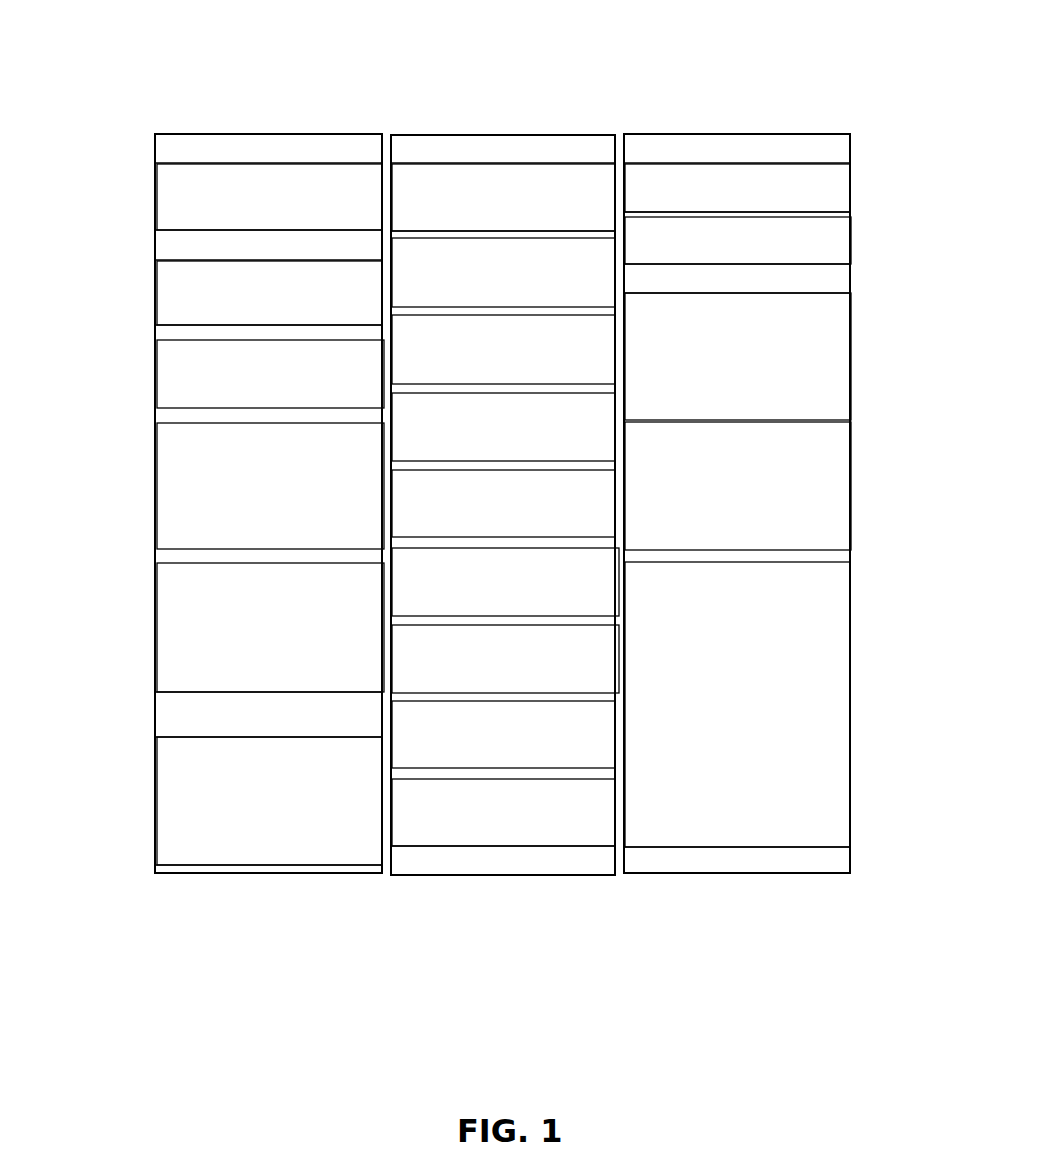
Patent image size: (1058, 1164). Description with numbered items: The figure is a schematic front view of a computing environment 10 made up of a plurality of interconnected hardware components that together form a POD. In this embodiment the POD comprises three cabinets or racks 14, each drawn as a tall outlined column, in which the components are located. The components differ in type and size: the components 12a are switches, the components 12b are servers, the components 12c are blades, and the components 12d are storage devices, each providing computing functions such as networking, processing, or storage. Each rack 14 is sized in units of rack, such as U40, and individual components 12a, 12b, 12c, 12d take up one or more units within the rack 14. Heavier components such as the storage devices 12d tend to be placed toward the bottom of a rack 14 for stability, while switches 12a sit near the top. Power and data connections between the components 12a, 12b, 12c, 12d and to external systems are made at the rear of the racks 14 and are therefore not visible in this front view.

The computing environment 10 is at (283, 92).
The rack 14 is at (345, 134).
The switch 12a is at (155, 201).
The server 12b is at (155, 293).
The blades 12c is at (155, 486).
The storage device 12d is at (155, 628).